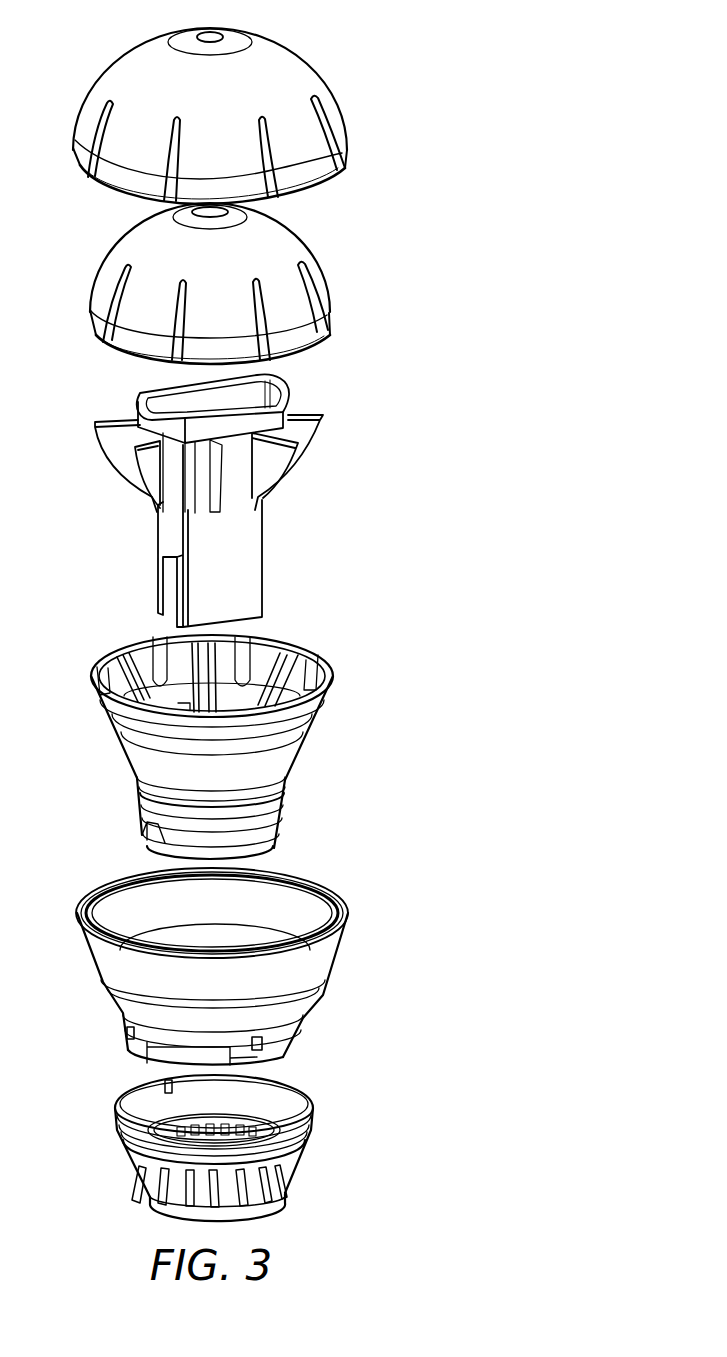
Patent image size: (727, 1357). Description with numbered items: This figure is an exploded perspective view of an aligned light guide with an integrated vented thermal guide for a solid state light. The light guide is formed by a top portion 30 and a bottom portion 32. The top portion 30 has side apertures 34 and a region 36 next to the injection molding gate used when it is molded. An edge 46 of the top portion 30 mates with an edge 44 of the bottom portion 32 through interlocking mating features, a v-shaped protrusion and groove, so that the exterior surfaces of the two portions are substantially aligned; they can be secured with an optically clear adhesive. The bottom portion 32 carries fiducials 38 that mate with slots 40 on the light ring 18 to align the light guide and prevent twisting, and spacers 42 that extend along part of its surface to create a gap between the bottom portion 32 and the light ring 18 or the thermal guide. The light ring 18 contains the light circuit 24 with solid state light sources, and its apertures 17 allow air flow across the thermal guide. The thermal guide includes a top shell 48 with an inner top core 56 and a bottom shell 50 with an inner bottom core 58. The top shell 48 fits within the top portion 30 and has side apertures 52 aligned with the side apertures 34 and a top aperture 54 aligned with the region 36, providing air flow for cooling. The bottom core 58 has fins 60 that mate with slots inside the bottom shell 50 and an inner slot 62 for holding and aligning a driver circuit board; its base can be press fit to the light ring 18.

The apertures 17 is at (228, 1193).
The light ring 18 is at (209, 1148).
The light circuit 24 is at (160, 1125).
The top portion 30 is at (303, 62).
The bottom portion 32 is at (230, 995).
The side apertures 34 is at (336, 140).
The region 36 is at (197, 34).
The fiducials 38 is at (125, 1033).
The slots 40 is at (165, 1087).
The spacers 42 is at (252, 1059).
The edge 44 is at (318, 882).
The edge 46 is at (103, 188).
The top shell 48 is at (299, 243).
The bottom shell 50 is at (300, 740).
The side apertures 52 is at (328, 300).
The top aperture 54 is at (181, 212).
The inner top core 56 is at (172, 328).
The bottom core 58 is at (264, 562).
The fins 60 is at (275, 463).
The inner slot 62 is at (252, 378).